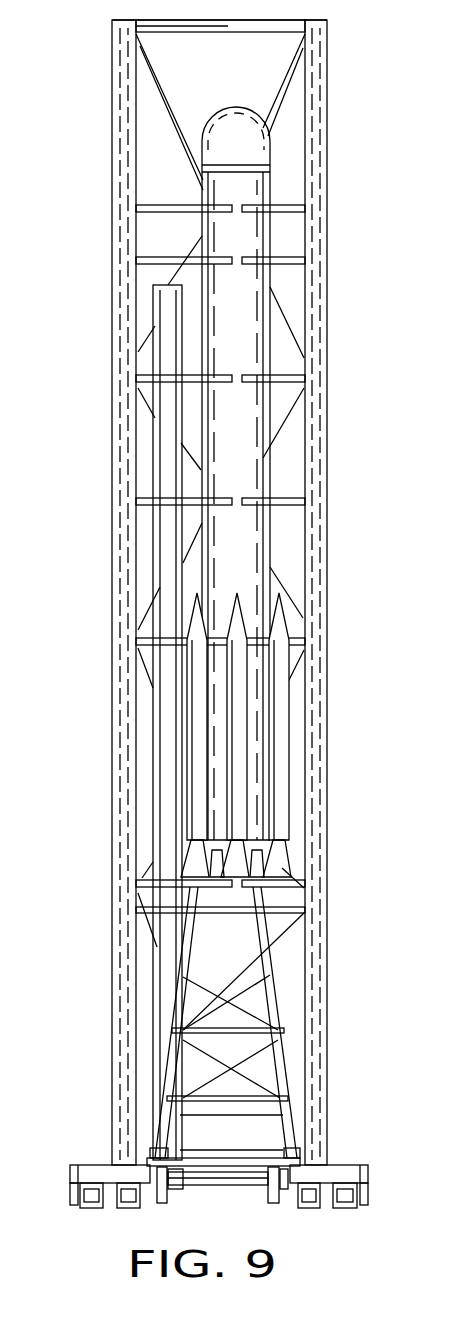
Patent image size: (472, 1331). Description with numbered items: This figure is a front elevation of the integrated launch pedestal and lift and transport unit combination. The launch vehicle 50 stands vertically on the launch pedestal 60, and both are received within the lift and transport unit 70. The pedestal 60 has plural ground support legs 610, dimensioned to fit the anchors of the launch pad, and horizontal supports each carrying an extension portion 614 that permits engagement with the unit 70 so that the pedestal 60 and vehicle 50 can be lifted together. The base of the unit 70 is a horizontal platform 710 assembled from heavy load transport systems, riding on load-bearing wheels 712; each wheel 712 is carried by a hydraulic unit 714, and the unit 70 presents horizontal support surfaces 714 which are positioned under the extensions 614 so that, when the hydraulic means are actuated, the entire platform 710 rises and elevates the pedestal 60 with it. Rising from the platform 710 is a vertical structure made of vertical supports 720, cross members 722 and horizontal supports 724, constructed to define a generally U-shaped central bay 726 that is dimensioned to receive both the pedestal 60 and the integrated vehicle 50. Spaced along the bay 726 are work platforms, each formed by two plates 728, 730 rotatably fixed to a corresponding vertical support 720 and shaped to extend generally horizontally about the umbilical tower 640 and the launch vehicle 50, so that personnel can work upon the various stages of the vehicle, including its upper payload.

The launch vehicle 50 is at (263, 455).
The launch pedestal 60 is at (282, 1008).
The lift and transport unit 70 is at (352, 183).
The ground support legs 610 is at (260, 1188).
The extension portion 614 is at (160, 1156).
The umbilical tower 640 is at (158, 452).
The horizontal platform 710 is at (82, 1166).
The load-bearing wheels 712 is at (88, 1209).
The hydraulic unit 714 is at (162, 1204).
The vertical supports 720 is at (112, 714).
The cross members 722 is at (284, 958).
The horizontal supports 724 is at (292, 908).
The central bay 726 is at (293, 549).
The plate 728 is at (162, 213).
The plate 730 is at (295, 212).